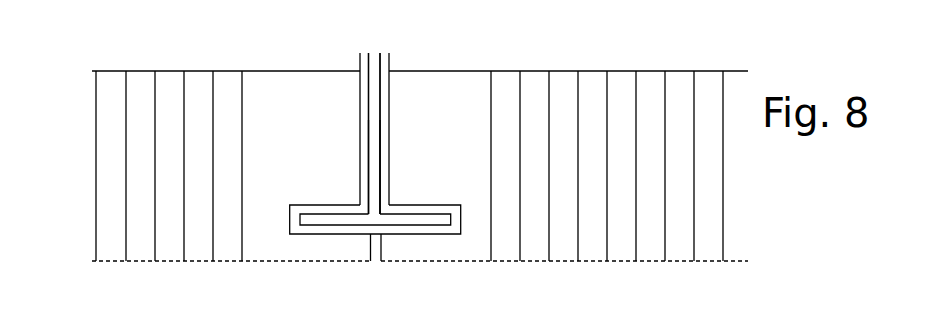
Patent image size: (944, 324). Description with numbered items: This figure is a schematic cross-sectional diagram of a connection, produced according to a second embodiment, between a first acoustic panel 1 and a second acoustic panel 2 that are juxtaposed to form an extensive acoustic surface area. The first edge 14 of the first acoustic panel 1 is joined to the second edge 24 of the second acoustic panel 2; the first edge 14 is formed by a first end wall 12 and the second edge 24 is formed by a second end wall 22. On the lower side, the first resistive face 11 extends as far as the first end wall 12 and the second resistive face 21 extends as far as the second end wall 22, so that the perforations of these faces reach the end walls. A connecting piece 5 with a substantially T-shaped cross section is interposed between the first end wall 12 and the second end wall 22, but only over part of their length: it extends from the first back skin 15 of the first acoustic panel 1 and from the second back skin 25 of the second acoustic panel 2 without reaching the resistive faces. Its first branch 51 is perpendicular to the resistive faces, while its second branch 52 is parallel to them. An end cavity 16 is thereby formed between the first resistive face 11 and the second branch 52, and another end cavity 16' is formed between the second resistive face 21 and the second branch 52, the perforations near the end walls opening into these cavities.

The first acoustic panel 1 is at (103, 192).
The second acoustic panel 2 is at (710, 190).
The connecting piece 5 is at (377, 50).
The first resistive face 11 is at (202, 263).
The first end wall 12 is at (360, 137).
The first edge 14 is at (360, 62).
The first back skin 15 is at (226, 70).
The end cavity 16 is at (347, 279).
The end cavity 16' is at (422, 279).
The second resistive face 21 is at (642, 262).
The second end wall 22 is at (392, 100).
The second edge 24 is at (388, 62).
The second back skin 25 is at (640, 70).
The first branch 51 is at (377, 150).
The second branch 52 is at (444, 208).